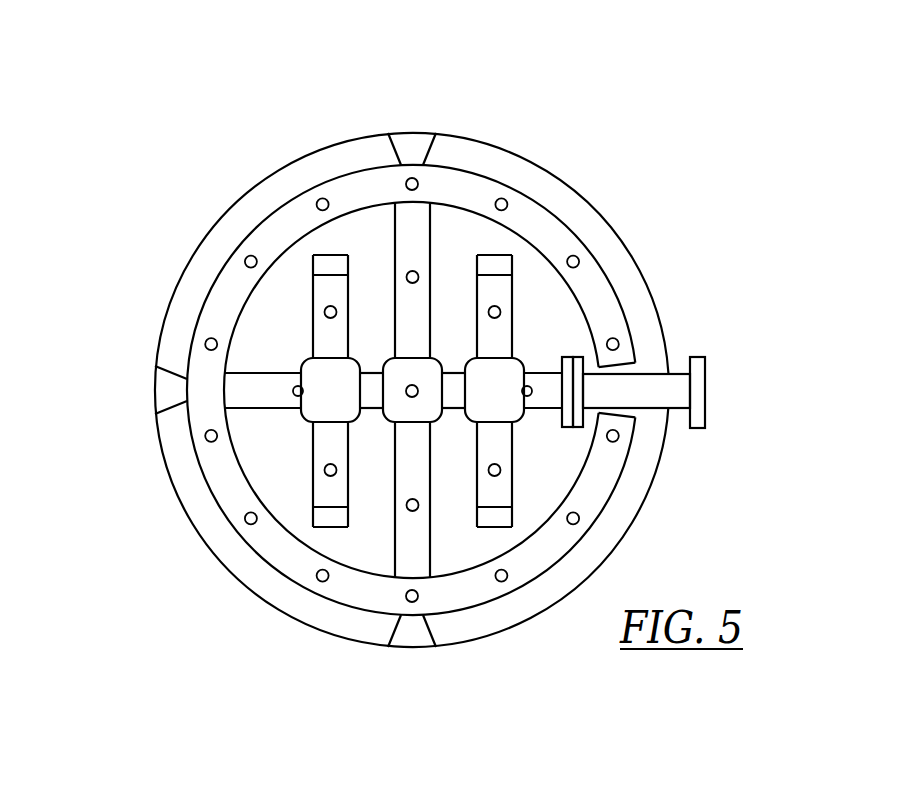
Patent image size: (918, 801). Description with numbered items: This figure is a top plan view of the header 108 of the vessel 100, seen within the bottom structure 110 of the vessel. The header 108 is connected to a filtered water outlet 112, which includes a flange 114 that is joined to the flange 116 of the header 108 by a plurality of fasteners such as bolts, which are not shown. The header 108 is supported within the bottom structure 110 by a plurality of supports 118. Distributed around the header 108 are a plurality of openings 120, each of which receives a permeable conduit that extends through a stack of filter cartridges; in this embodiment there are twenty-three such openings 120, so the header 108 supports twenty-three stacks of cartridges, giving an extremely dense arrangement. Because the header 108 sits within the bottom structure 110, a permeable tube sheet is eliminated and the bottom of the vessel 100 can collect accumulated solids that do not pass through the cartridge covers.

The vessel 100 is at (522, 97).
The header 108 is at (557, 215).
The bottom structure 110 is at (648, 283).
The filtered water outlet 112 is at (647, 372).
The flange 114 is at (575, 428).
The flange 116 is at (566, 356).
The supports 118 is at (418, 146).
The openings 120 is at (250, 256).